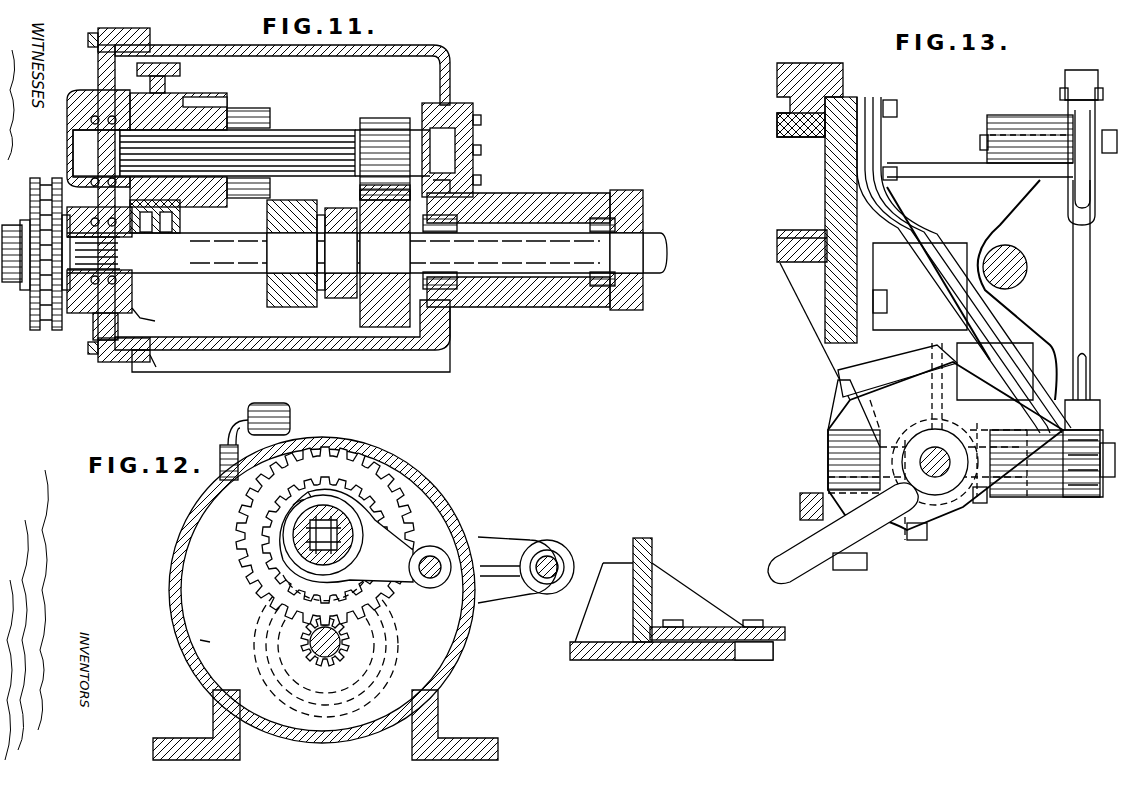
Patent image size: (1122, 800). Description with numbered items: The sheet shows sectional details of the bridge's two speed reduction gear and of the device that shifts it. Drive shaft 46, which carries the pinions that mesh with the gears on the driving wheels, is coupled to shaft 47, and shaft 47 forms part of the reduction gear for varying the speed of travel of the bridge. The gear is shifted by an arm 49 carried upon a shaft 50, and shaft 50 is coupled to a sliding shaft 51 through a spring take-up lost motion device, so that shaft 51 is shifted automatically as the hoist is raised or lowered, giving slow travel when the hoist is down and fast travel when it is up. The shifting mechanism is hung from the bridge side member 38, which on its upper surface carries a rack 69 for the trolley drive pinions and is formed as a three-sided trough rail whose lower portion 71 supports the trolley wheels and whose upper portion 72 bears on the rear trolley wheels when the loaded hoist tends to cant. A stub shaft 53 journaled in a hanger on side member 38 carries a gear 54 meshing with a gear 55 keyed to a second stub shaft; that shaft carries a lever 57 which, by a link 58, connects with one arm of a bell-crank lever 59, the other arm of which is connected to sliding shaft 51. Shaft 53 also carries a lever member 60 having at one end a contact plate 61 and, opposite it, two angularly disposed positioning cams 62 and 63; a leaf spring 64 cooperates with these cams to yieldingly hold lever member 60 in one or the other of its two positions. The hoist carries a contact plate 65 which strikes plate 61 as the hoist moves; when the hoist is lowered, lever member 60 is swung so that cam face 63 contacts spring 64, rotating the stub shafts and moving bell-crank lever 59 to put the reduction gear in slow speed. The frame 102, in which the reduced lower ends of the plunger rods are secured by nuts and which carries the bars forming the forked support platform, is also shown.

In FIG. 13, the side member 38 is at (838, 286).
In FIG. 13, the drive shaft 46 is at (1020, 262).
In FIG. 11, the shaft 47 is at (525, 240).
In FIG. 11, the arm 49 is at (247, 110).
In FIG. 12, the arm 49 is at (392, 555).
In FIG. 12, the shaft 50 is at (440, 558).
In FIG. 12, the sliding shaft 51 is at (550, 558).
In FIG. 13, the stub shaft 53 is at (936, 478).
In FIG. 13, the gear 54 is at (898, 520).
In FIG. 13, the gear 55 is at (980, 503).
In FIG. 13, the lever 57 is at (1080, 497).
In FIG. 13, the link 58 is at (1070, 290).
In FIG. 13, the bell-crank lever 59 is at (1078, 72).
In FIG. 13, the lever member 60 is at (957, 515).
In FIG. 13, the contact plate 61 is at (790, 552).
In FIG. 13, the positioning cam 62 is at (838, 378).
In FIG. 13, the positioning cam 63 is at (1045, 455).
In FIG. 13, the leaf spring 64 is at (930, 263).
In FIG. 13, the contact plate 65 is at (785, 635).
In FIG. 13, the rack 69 is at (818, 67).
In FIG. 13, the lower portion 71 is at (790, 232).
In FIG. 13, the upper portion 72 is at (805, 138).
In FIG. 13, the frame 102 is at (600, 660).